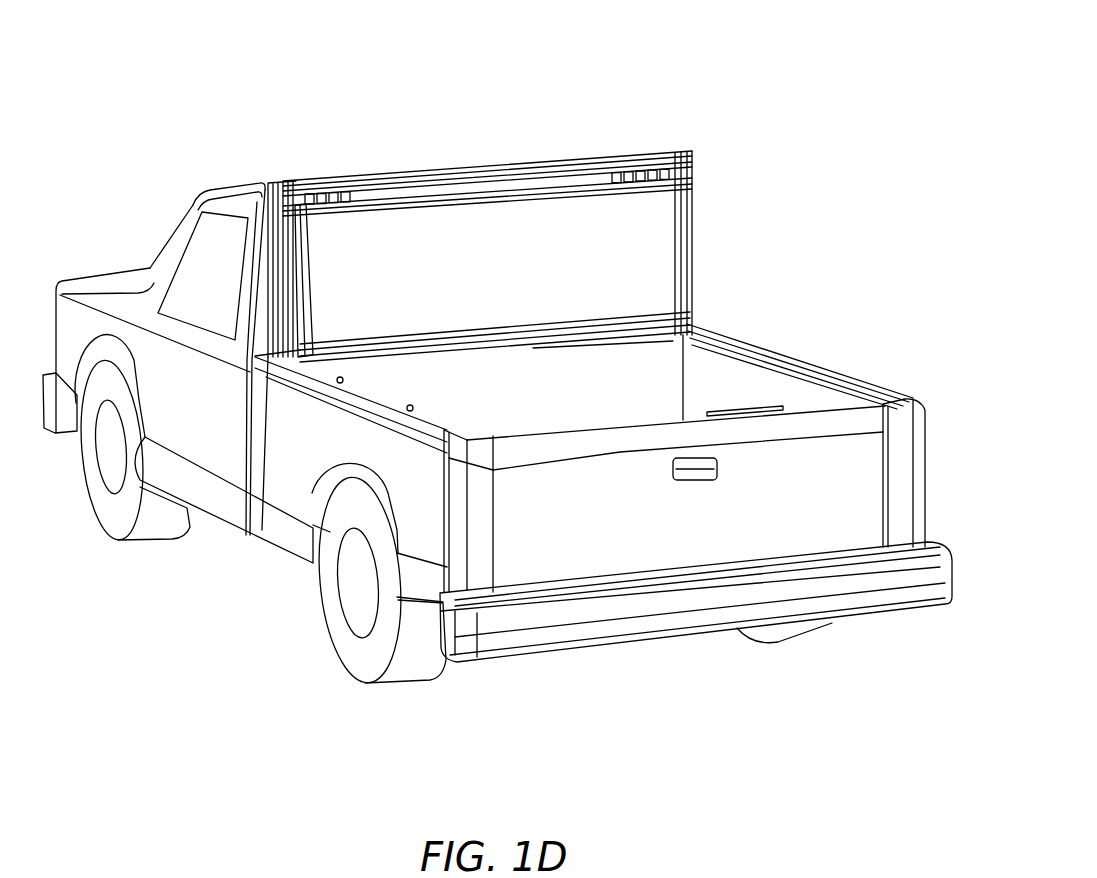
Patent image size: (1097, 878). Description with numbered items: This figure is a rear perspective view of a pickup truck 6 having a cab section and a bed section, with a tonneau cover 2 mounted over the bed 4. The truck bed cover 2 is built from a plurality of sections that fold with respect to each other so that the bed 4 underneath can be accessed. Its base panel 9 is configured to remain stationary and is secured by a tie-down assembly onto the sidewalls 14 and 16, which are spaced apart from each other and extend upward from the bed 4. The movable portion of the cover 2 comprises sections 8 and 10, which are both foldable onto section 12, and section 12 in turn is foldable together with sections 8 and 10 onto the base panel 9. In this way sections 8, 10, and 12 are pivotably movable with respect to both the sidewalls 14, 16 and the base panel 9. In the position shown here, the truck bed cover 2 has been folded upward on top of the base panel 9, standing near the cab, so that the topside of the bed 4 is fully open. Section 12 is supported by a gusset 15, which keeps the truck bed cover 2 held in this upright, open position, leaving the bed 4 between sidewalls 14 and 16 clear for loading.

The tonneau cover 2 is at (727, 142).
The bed 4 is at (703, 372).
The pickup truck 6 is at (283, 120).
The section 8 is at (274, 292).
The base panel 9 is at (268, 358).
The section 10 is at (286, 302).
The section 12 is at (656, 249).
The sidewall 14 is at (430, 522).
The gusset 15 is at (322, 301).
The sidewall 16 is at (929, 449).